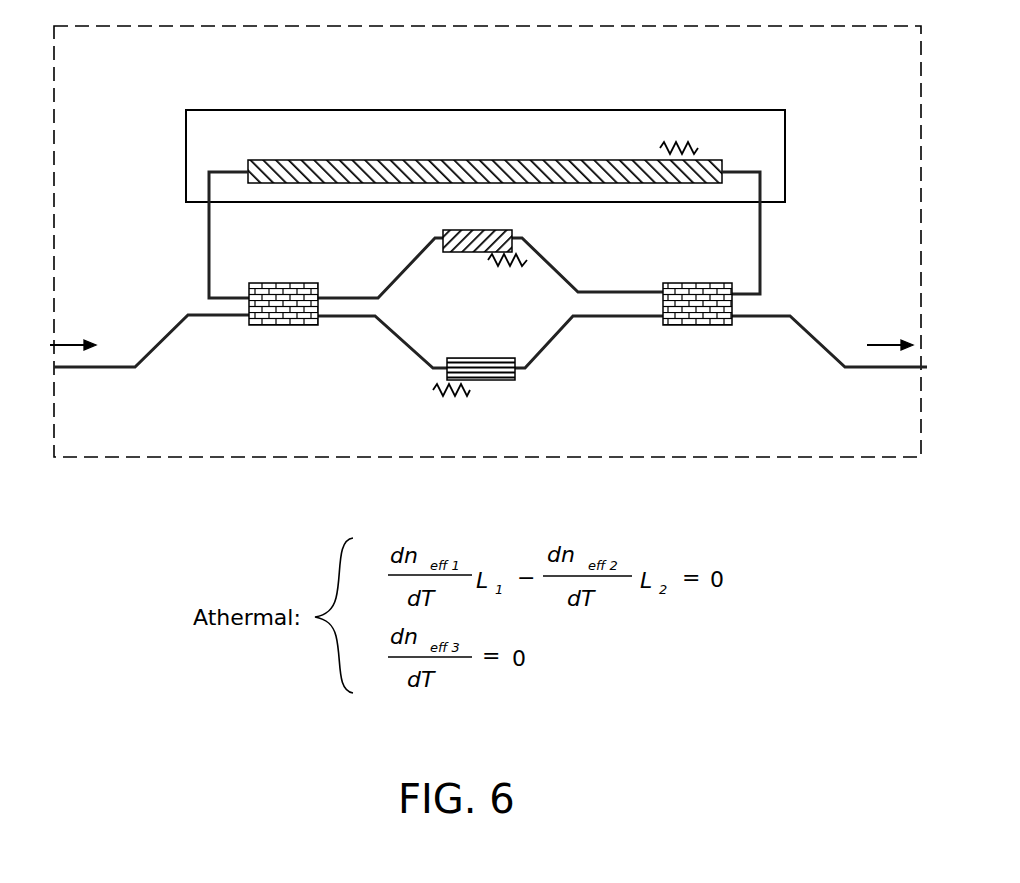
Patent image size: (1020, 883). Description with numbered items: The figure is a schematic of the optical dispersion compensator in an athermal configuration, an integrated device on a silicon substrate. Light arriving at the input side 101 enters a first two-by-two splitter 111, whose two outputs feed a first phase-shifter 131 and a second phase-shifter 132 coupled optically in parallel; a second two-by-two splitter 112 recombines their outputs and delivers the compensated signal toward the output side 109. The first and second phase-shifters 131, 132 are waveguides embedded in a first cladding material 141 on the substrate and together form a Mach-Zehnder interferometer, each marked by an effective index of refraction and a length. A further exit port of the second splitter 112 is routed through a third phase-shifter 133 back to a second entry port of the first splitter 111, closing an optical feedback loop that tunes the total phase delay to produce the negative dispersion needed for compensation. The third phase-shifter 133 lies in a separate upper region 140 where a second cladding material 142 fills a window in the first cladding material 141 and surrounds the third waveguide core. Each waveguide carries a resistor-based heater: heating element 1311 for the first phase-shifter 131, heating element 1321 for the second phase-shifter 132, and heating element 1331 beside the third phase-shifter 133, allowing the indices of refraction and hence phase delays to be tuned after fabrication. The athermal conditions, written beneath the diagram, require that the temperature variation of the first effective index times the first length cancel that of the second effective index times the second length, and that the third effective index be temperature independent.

The input waveguide 101 is at (96, 367).
The output waveguide 109 is at (898, 367).
The first 2×2 splitter 111 is at (285, 325).
The second 2×2 splitter 112 is at (685, 325).
The first phase-shifter 131 is at (452, 252).
The heating element 1311 is at (523, 270).
The second phase-shifter 132 is at (475, 382).
The heating element 1321 is at (450, 400).
The third phase-shifter 133 is at (537, 158).
The heating element 1331 is at (690, 143).
The thermal region 140 is at (742, 110).
The first cladding material 141 is at (623, 260).
The second cladding material 142 is at (628, 141).